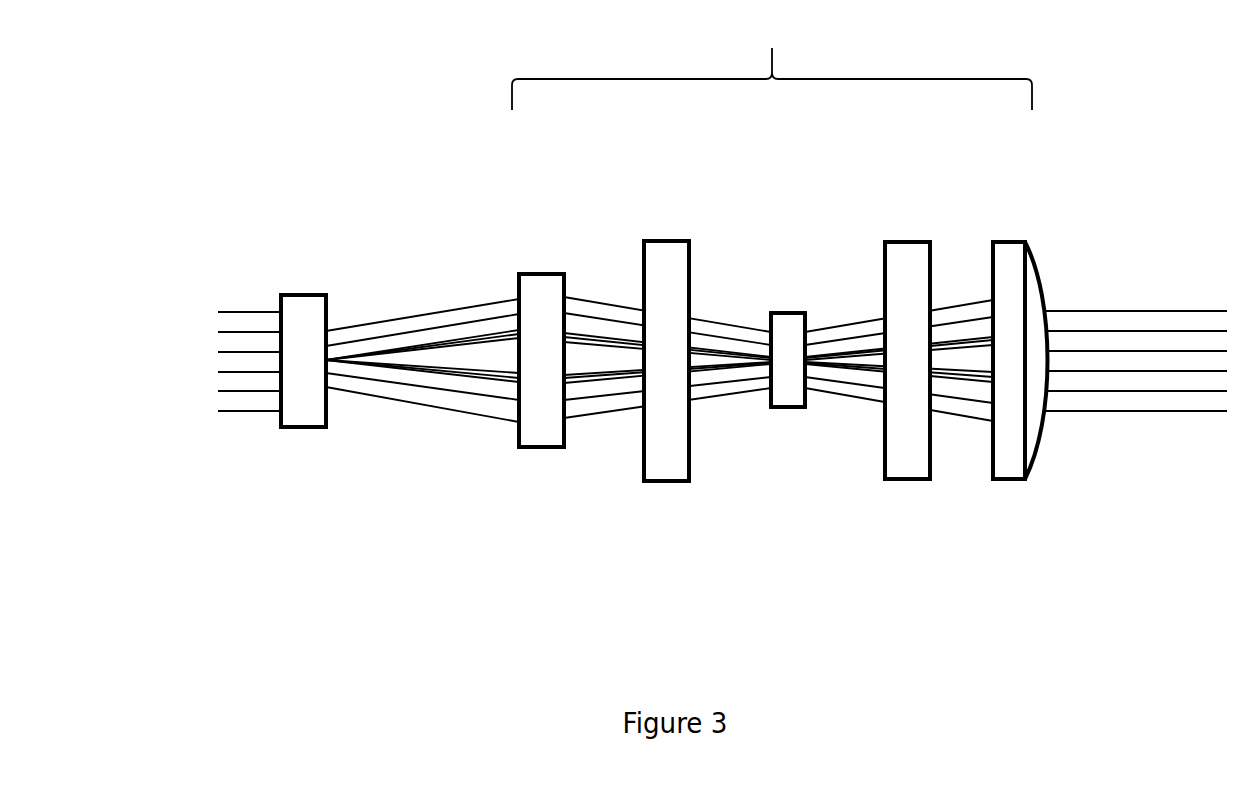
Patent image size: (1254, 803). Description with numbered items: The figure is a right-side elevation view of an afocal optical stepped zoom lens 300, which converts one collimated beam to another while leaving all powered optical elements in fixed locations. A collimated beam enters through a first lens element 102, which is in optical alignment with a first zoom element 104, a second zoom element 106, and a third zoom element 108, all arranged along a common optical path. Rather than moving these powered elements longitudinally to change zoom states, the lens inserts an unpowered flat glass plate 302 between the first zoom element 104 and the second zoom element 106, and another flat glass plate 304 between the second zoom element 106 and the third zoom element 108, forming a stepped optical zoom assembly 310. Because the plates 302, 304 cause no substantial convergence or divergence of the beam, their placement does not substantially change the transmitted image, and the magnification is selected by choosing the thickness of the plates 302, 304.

The afocal optical stepped zoom lens 300 is at (407, 126).
The stepped optical zoom assembly 310 is at (772, 57).
The first lens element 102 is at (289, 294).
The first zoom element 104 is at (534, 274).
The flat glass plate 302 is at (665, 242).
The second zoom element 106 is at (788, 313).
The flat glass plate 304 is at (910, 242).
The third zoom element 108 is at (1012, 242).